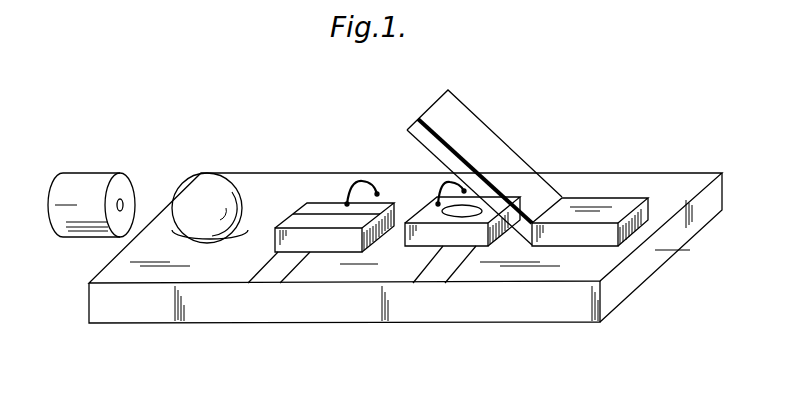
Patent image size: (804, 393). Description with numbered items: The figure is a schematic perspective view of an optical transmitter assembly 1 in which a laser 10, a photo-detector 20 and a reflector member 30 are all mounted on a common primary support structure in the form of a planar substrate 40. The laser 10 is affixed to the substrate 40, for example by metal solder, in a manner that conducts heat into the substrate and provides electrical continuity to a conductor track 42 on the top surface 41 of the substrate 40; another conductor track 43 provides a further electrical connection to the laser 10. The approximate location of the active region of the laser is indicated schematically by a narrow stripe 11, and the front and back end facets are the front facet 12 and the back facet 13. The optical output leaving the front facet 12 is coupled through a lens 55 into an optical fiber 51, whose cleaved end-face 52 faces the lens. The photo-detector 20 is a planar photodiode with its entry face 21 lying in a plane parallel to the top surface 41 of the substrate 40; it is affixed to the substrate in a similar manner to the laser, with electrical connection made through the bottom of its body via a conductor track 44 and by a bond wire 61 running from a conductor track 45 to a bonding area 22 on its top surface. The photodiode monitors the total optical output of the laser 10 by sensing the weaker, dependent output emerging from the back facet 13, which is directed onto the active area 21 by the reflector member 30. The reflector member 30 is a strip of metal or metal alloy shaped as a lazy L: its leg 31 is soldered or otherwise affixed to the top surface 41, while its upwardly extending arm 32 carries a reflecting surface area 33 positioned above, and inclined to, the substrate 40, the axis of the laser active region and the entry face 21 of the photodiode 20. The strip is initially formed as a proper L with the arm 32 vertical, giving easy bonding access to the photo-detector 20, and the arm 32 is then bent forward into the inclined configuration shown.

The optical transmitter assembly 1 is at (198, 341).
The laser 10 is at (323, 245).
The narrow stripe 11 is at (318, 212).
The front end facet 12 is at (292, 213).
The back end facet 13 is at (377, 222).
The photo-detector 20 is at (415, 240).
The entry face 21 is at (460, 214).
The bonding area 22 is at (438, 203).
The reflector member 30 is at (481, 137).
The leg 31 is at (622, 200).
The upwardly extending arm 32 is at (458, 115).
The reflecting surface area 33 is at (407, 142).
The planar substrate 40 is at (648, 262).
The top surface 41 is at (682, 181).
The conductor track 42 is at (267, 275).
The conductor track 43 is at (382, 187).
The conductor track 44 is at (438, 273).
The conductor track 45 is at (478, 191).
The optical fiber 51 is at (88, 180).
The cleaved fiber end-face 52 is at (125, 182).
The lens 55 is at (209, 177).
The bond wire 61 is at (481, 177).